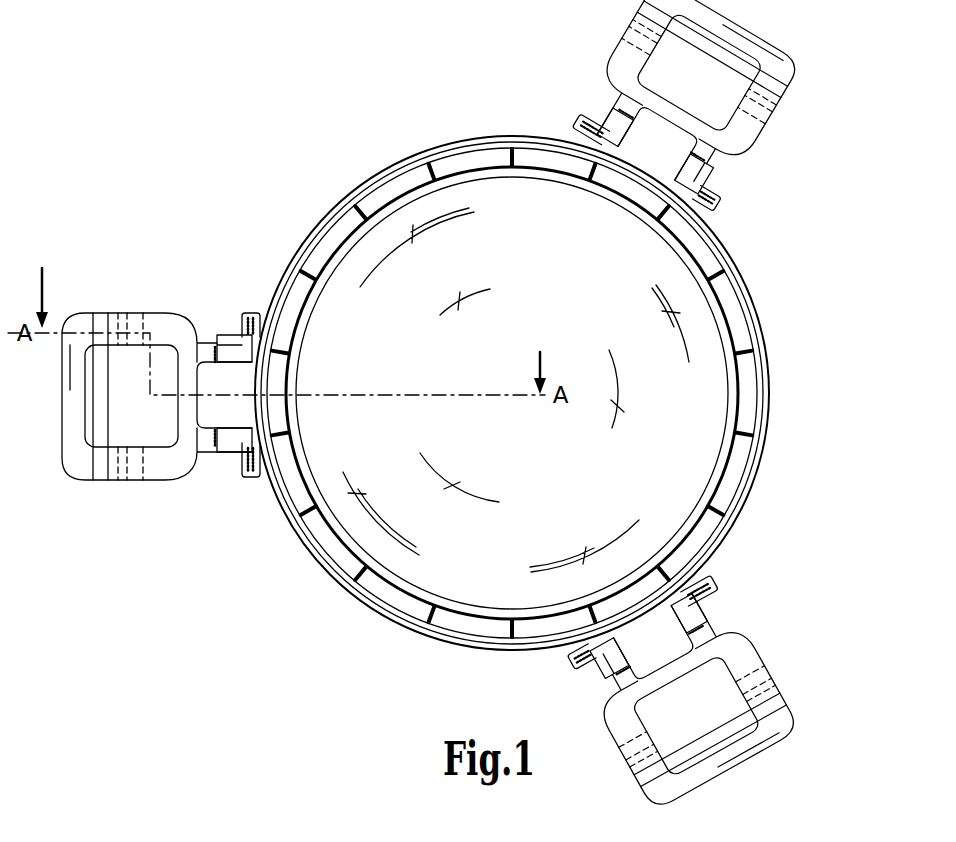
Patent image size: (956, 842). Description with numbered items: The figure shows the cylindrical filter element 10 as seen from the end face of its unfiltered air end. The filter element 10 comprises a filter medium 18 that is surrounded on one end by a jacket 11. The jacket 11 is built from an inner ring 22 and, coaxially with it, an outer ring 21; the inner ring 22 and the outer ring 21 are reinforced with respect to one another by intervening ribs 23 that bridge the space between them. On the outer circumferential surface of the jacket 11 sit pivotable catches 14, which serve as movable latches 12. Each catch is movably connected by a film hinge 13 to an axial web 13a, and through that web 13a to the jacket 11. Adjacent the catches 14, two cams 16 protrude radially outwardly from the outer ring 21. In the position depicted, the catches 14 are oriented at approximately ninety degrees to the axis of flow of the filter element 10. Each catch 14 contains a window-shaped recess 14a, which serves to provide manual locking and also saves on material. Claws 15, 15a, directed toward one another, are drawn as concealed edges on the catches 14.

The filter element 10 is at (302, 200).
The jacket 11 is at (760, 462).
The movable latches 12 is at (81, 305).
The film hinges 13 is at (201, 462).
The axial webs 13a is at (228, 328).
The pivotable catches 14 is at (175, 326).
The window-shaped recesses 14a is at (172, 482).
The claw 15 is at (106, 465).
The claw 15a is at (140, 465).
The cams 16 is at (249, 313).
The filter medium 18 is at (468, 580).
The outer ring 21 is at (768, 393).
The inner ring 22 is at (736, 393).
The ribs 23 is at (572, 180).